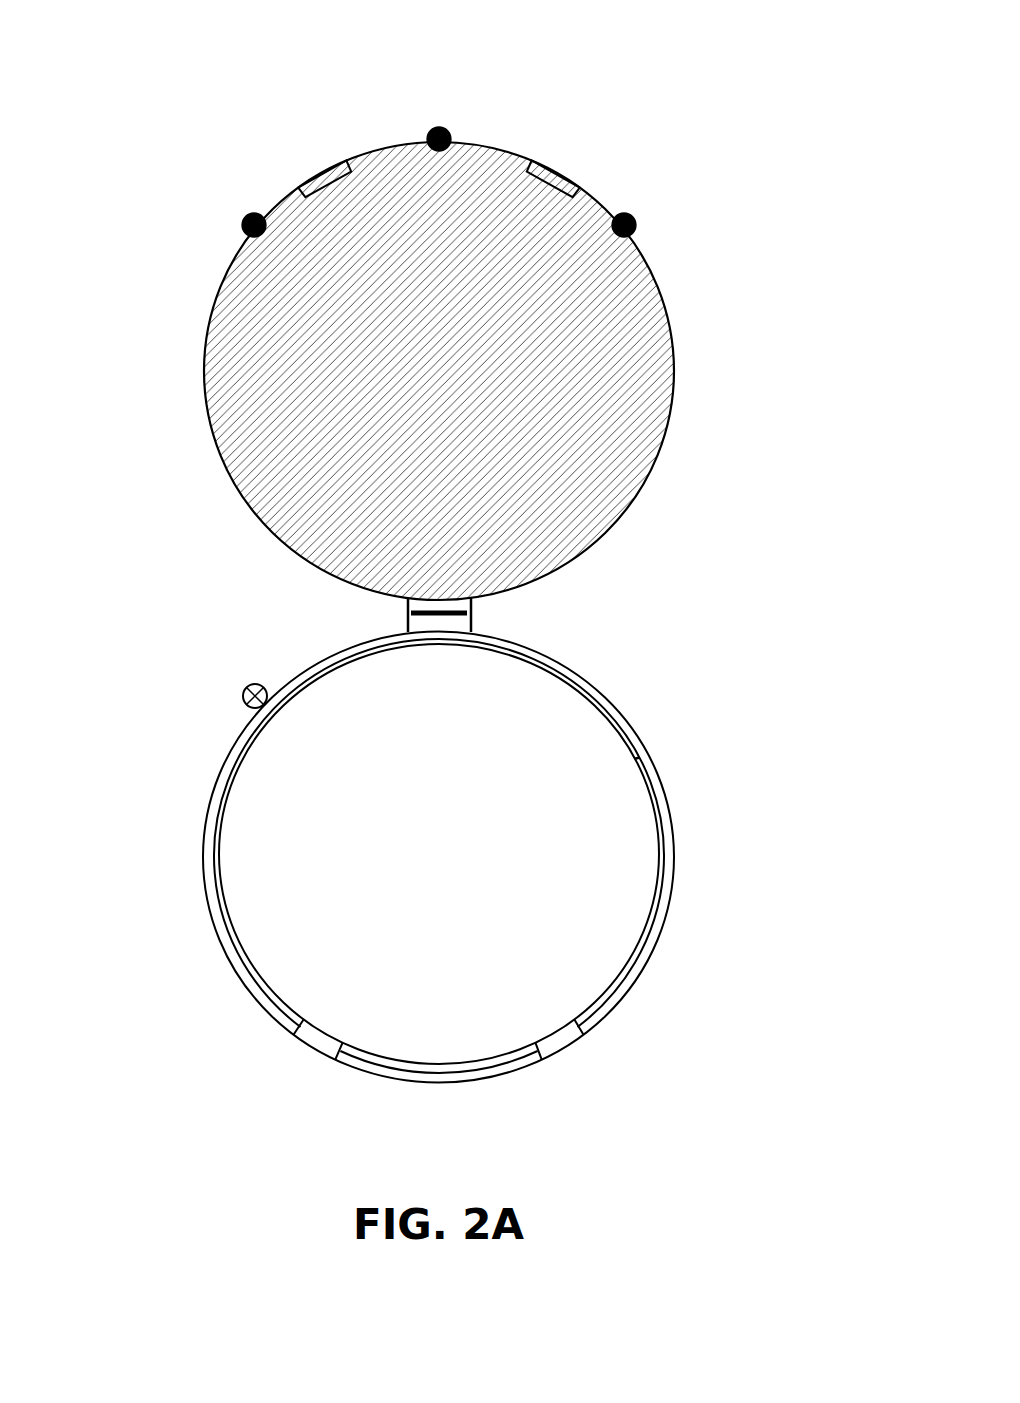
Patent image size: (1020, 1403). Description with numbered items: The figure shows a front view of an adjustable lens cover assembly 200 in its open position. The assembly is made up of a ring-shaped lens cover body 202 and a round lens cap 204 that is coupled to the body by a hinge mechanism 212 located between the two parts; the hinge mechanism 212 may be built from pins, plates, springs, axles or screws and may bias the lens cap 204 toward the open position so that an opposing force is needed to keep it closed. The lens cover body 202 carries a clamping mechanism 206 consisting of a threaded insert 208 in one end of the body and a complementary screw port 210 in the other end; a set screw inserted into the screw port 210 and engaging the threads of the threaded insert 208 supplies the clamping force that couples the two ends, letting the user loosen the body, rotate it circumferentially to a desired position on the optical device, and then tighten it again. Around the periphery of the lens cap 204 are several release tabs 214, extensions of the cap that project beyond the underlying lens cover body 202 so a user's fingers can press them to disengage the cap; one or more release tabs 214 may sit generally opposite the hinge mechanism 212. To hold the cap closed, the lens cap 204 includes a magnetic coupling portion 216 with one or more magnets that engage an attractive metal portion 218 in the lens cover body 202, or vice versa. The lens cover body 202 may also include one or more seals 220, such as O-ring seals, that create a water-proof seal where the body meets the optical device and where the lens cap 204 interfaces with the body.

The adjustable lens cover assembly 200 is at (208, 55).
The lens cover body 202 is at (670, 795).
The lens cap 204 is at (638, 288).
The clamping mechanism 206 is at (241, 678).
The threaded insert 208 is at (266, 684).
The screw port 210 is at (242, 710).
The hinge mechanism 212 is at (474, 613).
The release tabs 214 is at (443, 126).
The magnetic coupling portion 216 is at (334, 168).
The attractive metal portion 218 is at (312, 1052).
The seals 220 is at (650, 752).